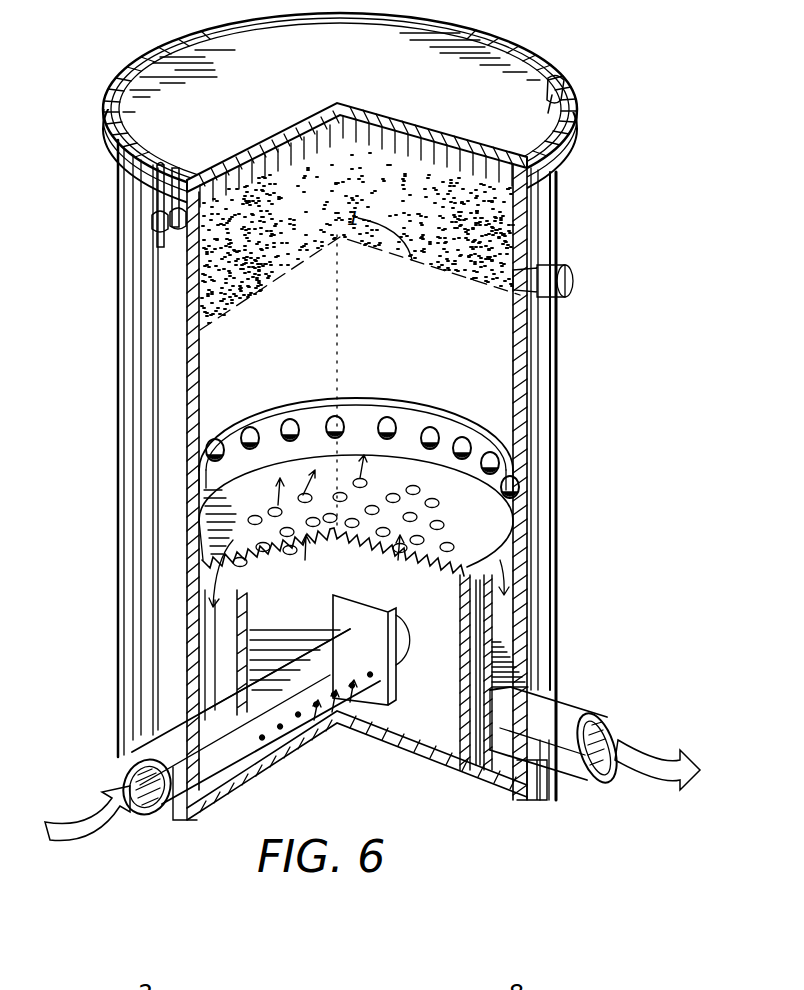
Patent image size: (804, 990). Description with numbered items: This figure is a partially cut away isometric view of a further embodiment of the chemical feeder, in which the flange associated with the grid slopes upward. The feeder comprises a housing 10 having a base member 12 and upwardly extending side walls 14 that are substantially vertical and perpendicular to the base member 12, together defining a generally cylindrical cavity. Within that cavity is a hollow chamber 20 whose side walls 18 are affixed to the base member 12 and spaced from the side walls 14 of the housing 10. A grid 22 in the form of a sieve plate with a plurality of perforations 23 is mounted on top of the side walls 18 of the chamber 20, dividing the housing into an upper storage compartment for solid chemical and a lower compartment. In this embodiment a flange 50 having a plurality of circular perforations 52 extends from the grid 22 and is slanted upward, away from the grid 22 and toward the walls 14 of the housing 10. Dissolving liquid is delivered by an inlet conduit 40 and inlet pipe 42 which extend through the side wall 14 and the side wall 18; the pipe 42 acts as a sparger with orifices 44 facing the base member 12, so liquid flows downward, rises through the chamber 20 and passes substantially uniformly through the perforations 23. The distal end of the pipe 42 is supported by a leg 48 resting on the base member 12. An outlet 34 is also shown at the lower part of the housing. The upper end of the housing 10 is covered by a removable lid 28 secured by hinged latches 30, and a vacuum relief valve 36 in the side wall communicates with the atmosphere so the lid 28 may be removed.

The housing 10 is at (372, 470).
The base member 12 is at (488, 783).
The side walls 14 is at (557, 500).
The side walls of chamber 18 is at (228, 628).
The hollow chamber 20 is at (442, 712).
The grid 22 is at (356, 587).
The perforations 23 is at (408, 515).
The lid 28 is at (460, 60).
The latches 30 is at (160, 240).
The outlet pipe 34 is at (580, 698).
The vacuum relief valve 36 is at (567, 273).
The inlet conduit 40 is at (165, 758).
The inlet pipe 42 is at (286, 718).
The orifices 44 is at (314, 727).
The leg 48 is at (357, 610).
The flange 50 is at (359, 423).
The perforations of flange 52 is at (462, 438).